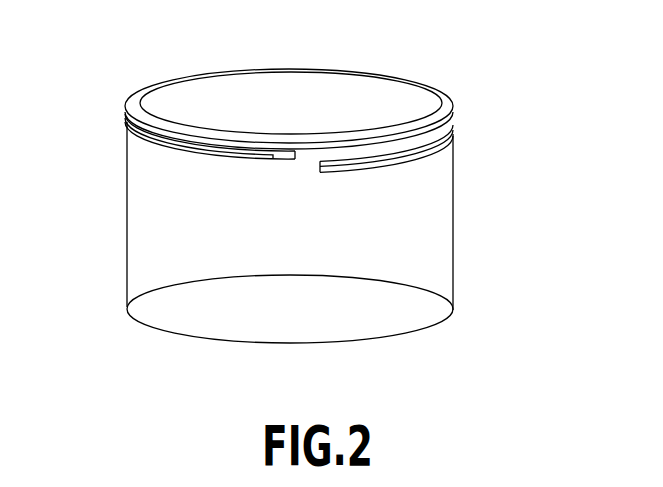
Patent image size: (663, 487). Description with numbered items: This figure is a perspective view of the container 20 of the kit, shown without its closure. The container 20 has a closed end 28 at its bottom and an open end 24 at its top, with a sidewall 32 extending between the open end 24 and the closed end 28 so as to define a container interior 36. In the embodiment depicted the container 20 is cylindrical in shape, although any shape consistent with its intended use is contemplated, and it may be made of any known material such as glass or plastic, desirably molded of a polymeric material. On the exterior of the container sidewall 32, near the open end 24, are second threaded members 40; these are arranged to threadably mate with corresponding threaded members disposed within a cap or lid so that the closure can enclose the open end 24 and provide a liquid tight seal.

The container 20 is at (319, 208).
The open end 24 is at (372, 95).
The closed end 28 is at (325, 343).
The sidewall 32 is at (127, 183).
The container interior 36 is at (243, 88).
The second threaded members 40 is at (126, 127).